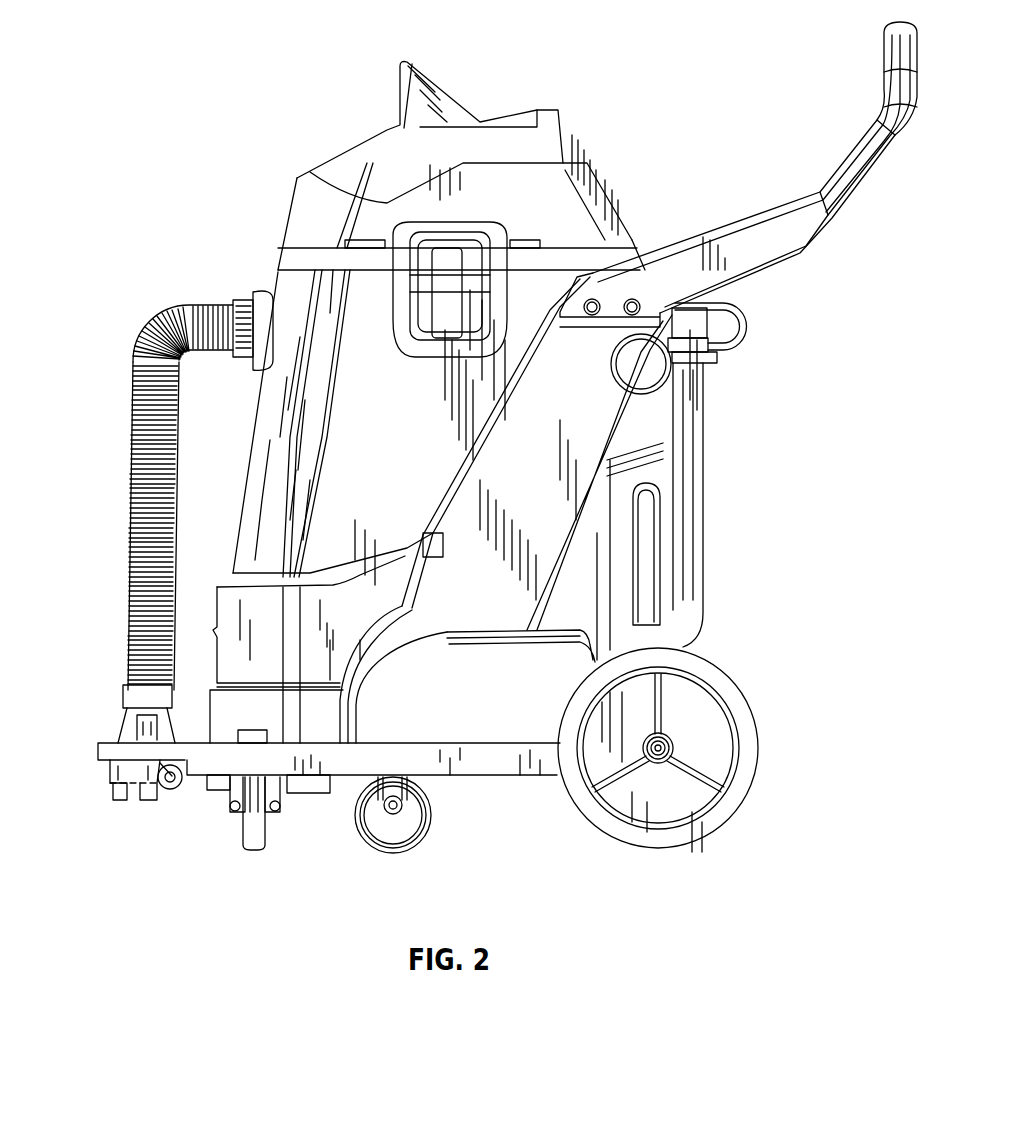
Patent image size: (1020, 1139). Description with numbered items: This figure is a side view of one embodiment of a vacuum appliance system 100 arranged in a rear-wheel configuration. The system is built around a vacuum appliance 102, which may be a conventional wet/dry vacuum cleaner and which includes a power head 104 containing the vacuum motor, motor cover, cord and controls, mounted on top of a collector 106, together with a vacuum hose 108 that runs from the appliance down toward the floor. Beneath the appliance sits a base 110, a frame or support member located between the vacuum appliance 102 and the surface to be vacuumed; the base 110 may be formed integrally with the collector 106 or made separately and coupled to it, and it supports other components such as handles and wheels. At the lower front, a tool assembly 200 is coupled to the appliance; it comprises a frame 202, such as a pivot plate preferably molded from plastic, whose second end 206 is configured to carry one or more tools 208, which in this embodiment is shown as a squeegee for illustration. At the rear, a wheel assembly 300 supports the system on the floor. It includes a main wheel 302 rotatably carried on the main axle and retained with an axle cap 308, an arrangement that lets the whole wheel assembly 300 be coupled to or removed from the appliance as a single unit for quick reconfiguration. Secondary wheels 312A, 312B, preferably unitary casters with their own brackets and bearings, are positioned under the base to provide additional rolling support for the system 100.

The vacuum appliance system 100 is at (165, 46).
The vacuum appliance 102 is at (603, 360).
The power head 104 is at (300, 218).
The collector 106 is at (290, 293).
The vacuum hose 108 is at (130, 370).
The base 110 is at (320, 713).
The tool assembly 200 is at (118, 818).
The frame 202 is at (200, 768).
The second end 206 is at (108, 757).
The tool 208 is at (107, 767).
The wheel assembly 300 is at (678, 867).
The main wheel 302 is at (747, 750).
The axle cap 308 is at (674, 746).
The secondary wheel 312A is at (253, 840).
The secondary wheel 312B is at (390, 827).